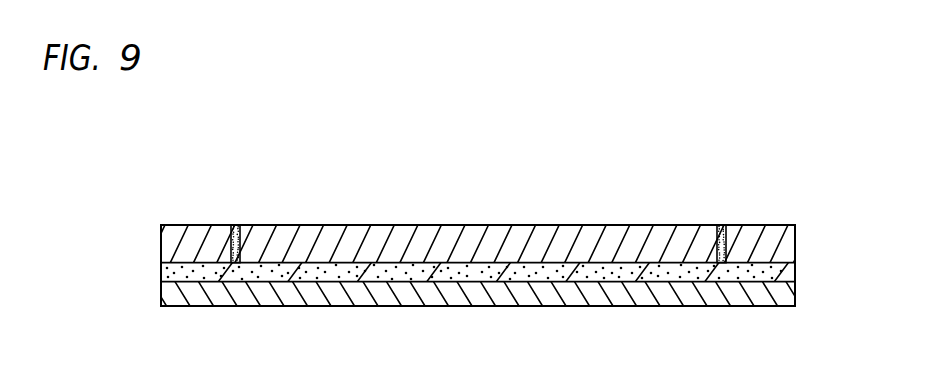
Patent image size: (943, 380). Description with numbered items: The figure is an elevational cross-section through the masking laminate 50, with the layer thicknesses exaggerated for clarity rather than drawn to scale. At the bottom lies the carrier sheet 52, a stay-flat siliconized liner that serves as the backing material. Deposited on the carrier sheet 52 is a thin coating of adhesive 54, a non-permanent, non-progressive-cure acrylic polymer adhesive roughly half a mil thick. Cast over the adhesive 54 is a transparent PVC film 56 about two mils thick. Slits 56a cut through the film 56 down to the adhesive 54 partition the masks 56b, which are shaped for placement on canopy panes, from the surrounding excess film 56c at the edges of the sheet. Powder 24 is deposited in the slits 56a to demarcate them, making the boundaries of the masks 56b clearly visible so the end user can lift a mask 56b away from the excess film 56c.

The masking laminate 50 is at (128, 146).
The carrier sheet 52 is at (161, 297).
The adhesive 54 is at (160, 273).
The PVC film 56 is at (158, 248).
The slits 56a is at (230, 225).
The masks 56b is at (508, 224).
The excess film 56c is at (161, 225).
The powder 24 is at (230, 243).